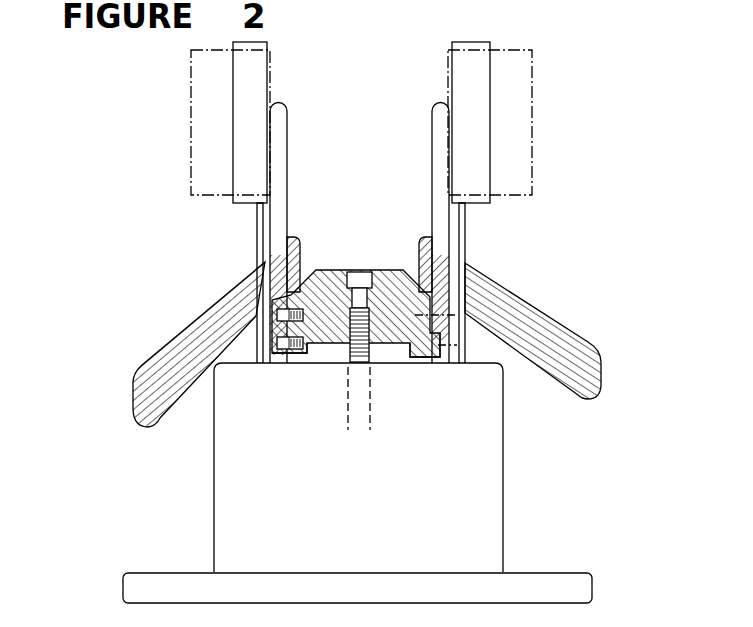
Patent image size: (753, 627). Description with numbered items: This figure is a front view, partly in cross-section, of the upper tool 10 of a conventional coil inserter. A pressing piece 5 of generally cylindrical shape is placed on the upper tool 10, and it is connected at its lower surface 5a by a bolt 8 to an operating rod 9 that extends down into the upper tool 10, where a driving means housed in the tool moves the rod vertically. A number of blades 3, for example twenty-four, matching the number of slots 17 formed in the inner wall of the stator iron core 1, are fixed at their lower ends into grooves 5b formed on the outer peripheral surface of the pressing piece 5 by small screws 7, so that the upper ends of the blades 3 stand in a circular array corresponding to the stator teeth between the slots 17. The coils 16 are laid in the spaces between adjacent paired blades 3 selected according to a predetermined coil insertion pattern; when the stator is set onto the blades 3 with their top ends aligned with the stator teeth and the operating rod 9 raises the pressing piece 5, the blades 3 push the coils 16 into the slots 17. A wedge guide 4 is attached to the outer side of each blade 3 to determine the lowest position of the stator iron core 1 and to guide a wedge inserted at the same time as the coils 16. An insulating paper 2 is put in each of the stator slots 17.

The stator iron core 1 is at (190, 119).
The insulating paper 2 is at (266, 41).
The blades 3 is at (282, 128).
The wedge guide 4 is at (465, 246).
The pressing piece 5 is at (307, 277).
The lower surface 5a is at (322, 338).
The grooves 5b is at (433, 337).
The small screws 7 is at (291, 303).
The bolt 8 is at (358, 277).
The operating rod 9 is at (368, 352).
The upper tool 10 is at (505, 398).
The coils 16 is at (172, 340).
The slots 17 is at (359, 175).